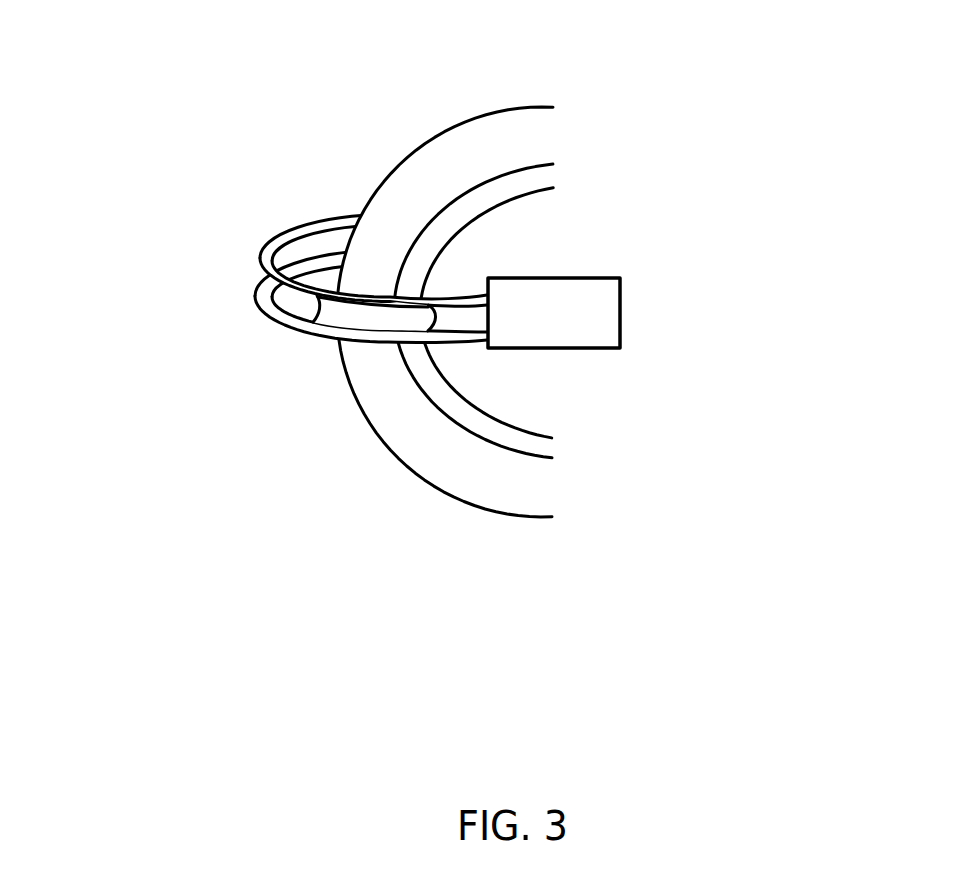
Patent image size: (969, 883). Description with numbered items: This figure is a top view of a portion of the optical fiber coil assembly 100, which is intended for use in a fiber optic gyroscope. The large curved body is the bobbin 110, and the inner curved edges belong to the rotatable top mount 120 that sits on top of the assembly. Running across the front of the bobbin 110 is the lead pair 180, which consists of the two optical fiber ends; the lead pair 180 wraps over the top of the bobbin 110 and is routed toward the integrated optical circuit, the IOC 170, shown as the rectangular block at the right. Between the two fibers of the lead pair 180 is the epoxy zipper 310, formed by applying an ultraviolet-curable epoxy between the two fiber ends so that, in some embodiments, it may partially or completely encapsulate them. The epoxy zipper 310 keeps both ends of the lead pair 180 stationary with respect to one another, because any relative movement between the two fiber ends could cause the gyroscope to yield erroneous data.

The optical fiber coil assembly 100 is at (450, 286).
The bobbin 110 is at (537, 498).
The rotatable top mount 120 is at (537, 440).
The integrated optical circuit (IOC) 170 is at (618, 278).
The lead pair 180 is at (256, 295).
The epoxy zipper 310 is at (312, 324).